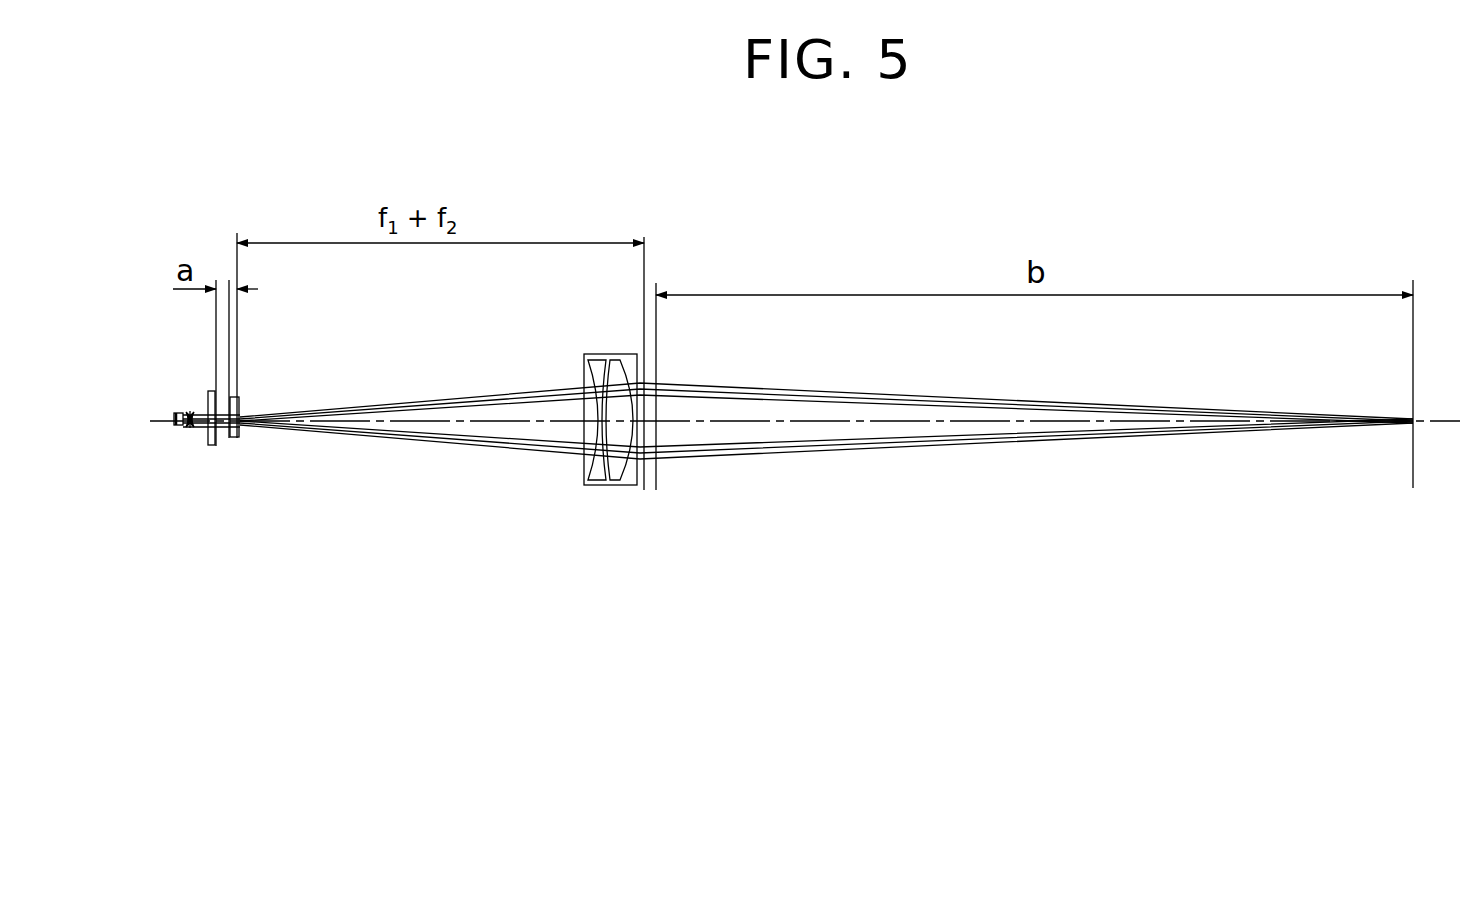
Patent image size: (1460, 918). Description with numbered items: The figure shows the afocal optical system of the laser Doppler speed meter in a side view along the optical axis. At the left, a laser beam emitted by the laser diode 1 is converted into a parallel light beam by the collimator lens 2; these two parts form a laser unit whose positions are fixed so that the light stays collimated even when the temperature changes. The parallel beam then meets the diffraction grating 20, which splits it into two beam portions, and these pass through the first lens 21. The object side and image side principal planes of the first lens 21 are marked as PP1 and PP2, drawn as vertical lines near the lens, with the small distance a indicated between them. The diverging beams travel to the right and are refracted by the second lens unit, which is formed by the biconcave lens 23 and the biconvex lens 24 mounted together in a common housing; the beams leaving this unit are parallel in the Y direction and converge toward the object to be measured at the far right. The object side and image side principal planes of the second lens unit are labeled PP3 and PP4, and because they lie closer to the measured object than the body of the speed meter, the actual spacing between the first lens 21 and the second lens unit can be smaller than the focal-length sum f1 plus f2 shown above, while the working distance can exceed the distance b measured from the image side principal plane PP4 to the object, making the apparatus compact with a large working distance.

The laser diode 1 is at (175, 413).
The collimator lens 2 is at (190, 411).
The diffraction grating 20 is at (206, 445).
The first lens 21 is at (233, 438).
The biconcave lens 23 is at (597, 480).
The biconvex lens 24 is at (625, 480).
The object side principal plane of the first lens PP1 is at (227, 440).
The image side principal plane of the first lens PP2 is at (238, 427).
The object side principal plane of the second lens unit PP3 is at (642, 425).
The image side principal plane of the second lens unit PP4 is at (657, 425).